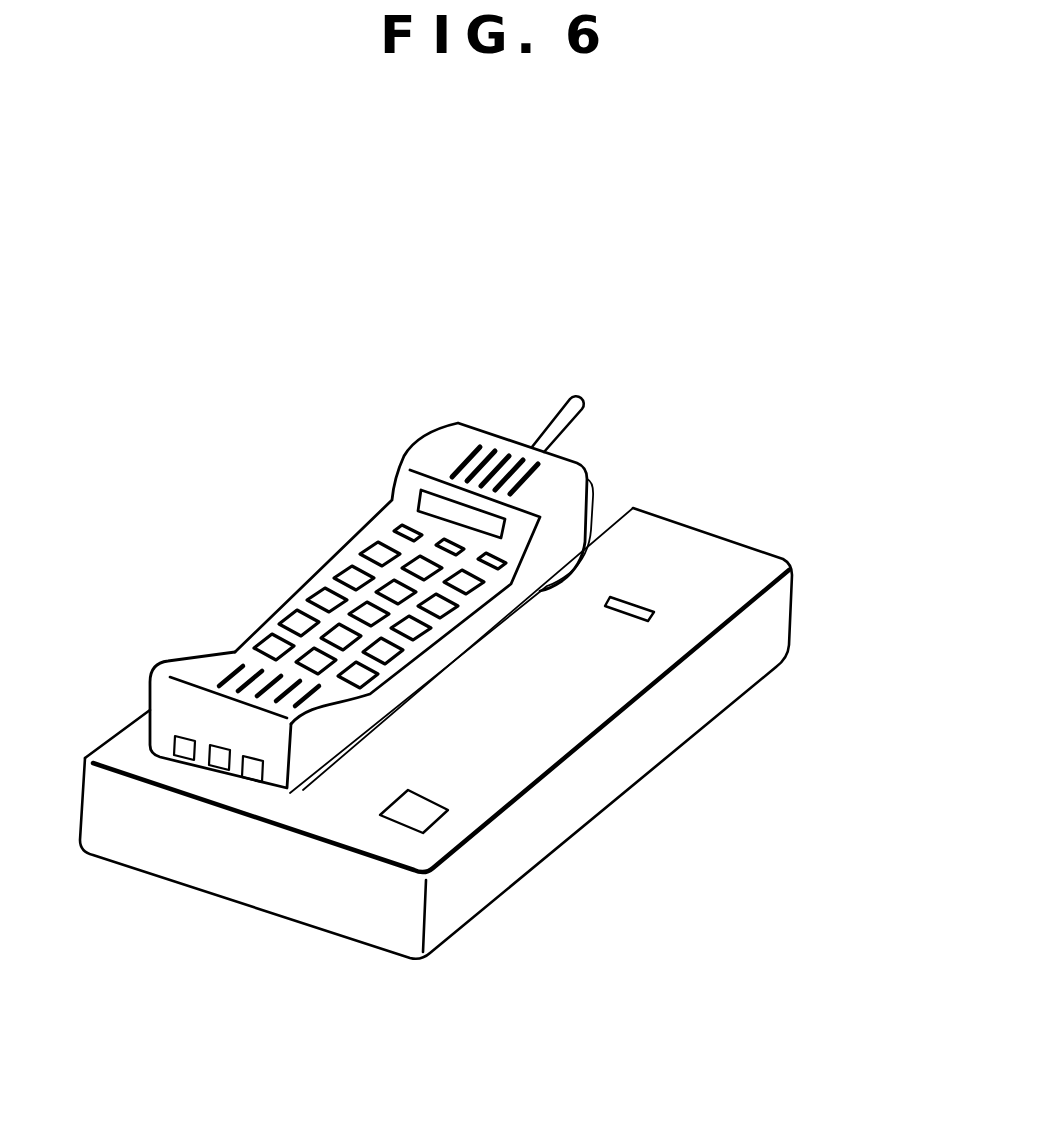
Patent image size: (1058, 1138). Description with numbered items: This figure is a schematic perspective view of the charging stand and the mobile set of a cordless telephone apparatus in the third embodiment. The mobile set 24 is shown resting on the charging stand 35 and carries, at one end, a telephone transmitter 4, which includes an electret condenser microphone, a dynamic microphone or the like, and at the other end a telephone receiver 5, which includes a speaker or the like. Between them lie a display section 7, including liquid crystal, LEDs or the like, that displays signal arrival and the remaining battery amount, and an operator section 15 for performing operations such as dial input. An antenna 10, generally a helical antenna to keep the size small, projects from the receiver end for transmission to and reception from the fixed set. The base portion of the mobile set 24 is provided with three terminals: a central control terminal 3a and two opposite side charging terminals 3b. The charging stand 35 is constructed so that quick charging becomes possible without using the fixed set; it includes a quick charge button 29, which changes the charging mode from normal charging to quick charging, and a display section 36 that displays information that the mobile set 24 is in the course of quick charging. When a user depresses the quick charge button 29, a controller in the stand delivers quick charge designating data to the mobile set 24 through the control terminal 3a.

The control terminal 3a is at (220, 763).
The charging terminals 3b is at (182, 752).
The telephone transmitter 4 is at (212, 674).
The telephone receiver 5 is at (449, 458).
The display section 7 is at (405, 517).
The antenna 10 is at (540, 425).
The operator section 15 is at (318, 594).
The mobile set 24 is at (329, 533).
The quick charge button 29 is at (440, 812).
The charging stand 35 is at (810, 580).
The display section 36 is at (647, 621).